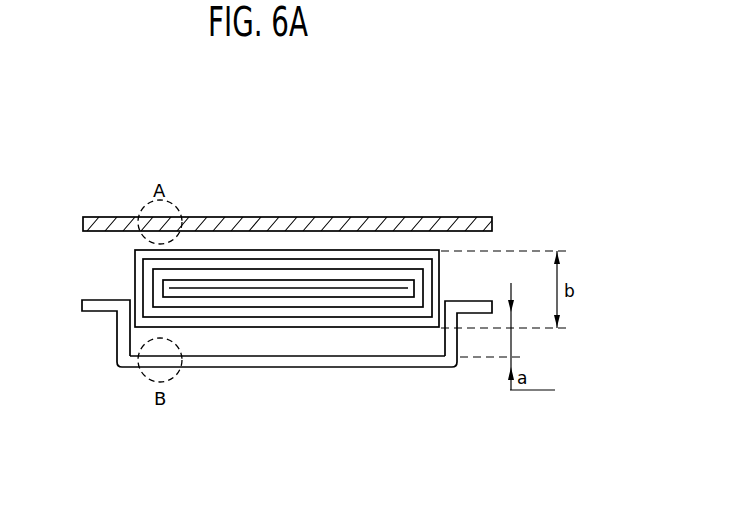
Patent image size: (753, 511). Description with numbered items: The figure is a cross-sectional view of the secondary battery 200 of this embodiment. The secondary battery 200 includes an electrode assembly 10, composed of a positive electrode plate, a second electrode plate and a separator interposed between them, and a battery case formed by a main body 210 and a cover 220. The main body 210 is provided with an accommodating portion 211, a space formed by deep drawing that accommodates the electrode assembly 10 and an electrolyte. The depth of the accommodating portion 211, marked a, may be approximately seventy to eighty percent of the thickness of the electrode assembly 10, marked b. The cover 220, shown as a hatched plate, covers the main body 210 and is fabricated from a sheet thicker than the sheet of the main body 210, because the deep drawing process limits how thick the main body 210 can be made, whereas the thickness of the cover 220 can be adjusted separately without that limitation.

The secondary battery 200 is at (479, 137).
The cover 220 is at (102, 214).
The electrode assembly 10 is at (131, 271).
The main body 210 is at (96, 314).
The accommodating portion 211 is at (303, 346).